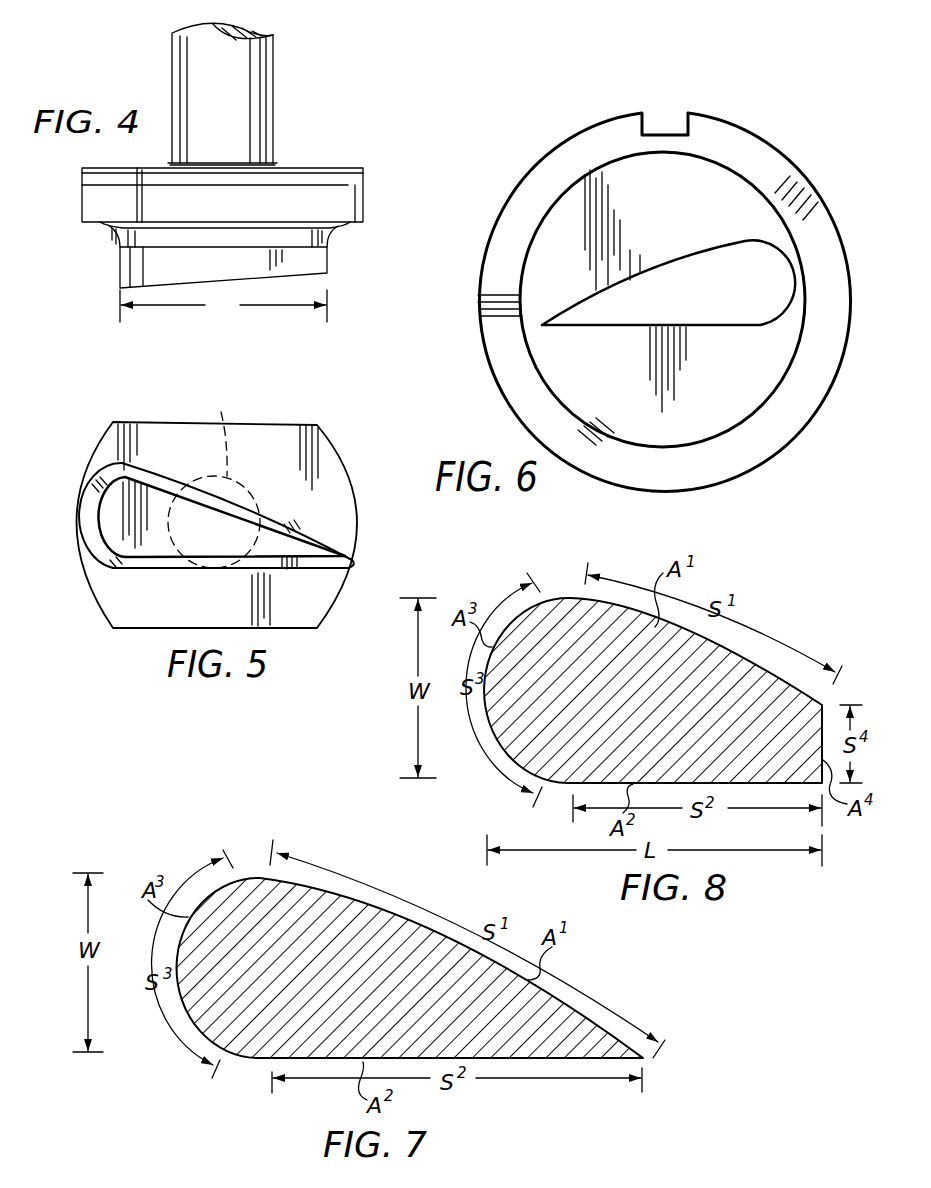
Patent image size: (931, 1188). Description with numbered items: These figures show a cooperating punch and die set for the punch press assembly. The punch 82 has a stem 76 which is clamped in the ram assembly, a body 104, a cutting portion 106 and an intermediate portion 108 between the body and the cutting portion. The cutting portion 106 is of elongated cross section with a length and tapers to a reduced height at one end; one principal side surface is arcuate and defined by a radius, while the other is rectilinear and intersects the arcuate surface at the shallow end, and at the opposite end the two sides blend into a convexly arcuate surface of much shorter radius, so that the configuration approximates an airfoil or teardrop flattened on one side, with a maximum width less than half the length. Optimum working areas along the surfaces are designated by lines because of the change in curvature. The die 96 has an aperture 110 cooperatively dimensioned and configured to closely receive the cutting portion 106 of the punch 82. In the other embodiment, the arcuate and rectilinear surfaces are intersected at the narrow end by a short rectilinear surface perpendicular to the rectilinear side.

In FIG. 4, the stem 76 is at (270, 100).
In FIG. 5, the stem 76 is at (224, 414).
In FIG. 4, the punch 82 is at (360, 240).
In FIG. 4, the body 104 is at (345, 184).
In FIG. 5, the body 104 is at (311, 398).
In FIG. 4, the cutting portion 106 is at (130, 262).
In FIG. 5, the cutting portion 106 is at (163, 502).
In FIG. 4, the intermediate portion 108 is at (113, 236).
In FIG. 5, the intermediate portion 108 is at (268, 503).
In FIG. 6, the die 96 is at (817, 427).
In FIG. 6, the aperture 110 is at (744, 252).